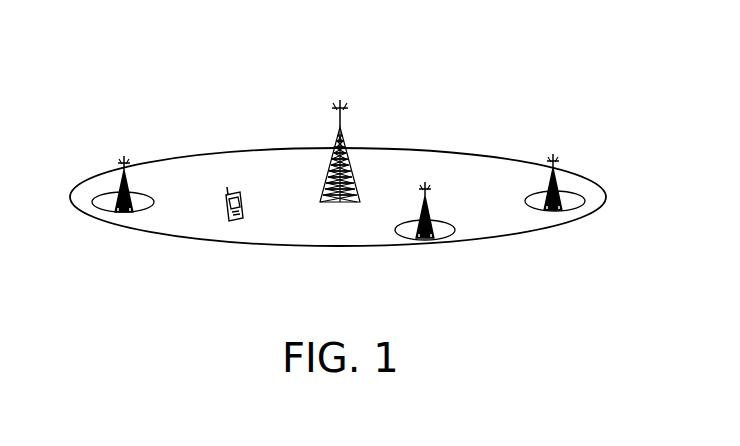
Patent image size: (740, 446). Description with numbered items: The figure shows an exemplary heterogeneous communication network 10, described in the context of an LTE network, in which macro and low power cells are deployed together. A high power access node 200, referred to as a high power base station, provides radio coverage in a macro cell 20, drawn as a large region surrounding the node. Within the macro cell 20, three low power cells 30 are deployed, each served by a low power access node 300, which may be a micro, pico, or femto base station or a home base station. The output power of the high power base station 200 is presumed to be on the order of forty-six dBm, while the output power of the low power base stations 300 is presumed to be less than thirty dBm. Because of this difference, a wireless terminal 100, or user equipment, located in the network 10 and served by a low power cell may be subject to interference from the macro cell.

The heterogeneous communication network 10 is at (438, 58).
The macro cell 20 is at (230, 244).
The low power cell 30 is at (140, 208).
The wireless terminal 100 is at (232, 188).
The high power access node 200 is at (335, 128).
The low power access node 300 is at (118, 176).